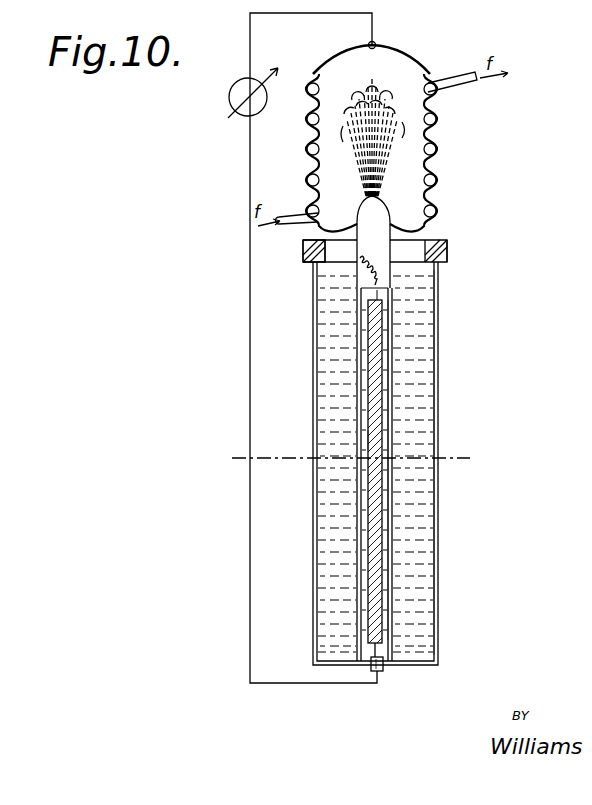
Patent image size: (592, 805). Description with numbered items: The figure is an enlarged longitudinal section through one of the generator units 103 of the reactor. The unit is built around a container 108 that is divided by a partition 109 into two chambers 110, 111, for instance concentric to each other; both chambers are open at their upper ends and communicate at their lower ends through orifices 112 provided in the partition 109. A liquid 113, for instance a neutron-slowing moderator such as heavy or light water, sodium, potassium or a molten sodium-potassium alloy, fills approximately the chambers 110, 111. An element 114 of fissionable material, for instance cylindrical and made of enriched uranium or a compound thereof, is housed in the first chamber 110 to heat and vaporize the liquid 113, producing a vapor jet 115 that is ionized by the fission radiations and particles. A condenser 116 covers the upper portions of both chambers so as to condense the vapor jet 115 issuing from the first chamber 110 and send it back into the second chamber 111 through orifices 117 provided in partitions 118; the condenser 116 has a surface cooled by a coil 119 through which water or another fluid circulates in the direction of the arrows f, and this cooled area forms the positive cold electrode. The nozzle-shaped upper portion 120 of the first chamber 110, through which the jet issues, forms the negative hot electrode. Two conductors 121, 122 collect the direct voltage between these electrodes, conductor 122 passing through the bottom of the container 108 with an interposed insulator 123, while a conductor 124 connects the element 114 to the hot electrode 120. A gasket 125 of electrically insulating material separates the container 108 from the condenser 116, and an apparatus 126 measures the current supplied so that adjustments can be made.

The generator unit 103 is at (446, 296).
The container 108 is at (436, 390).
The partition 109 is at (393, 343).
The first chamber 110 is at (386, 548).
The second chamber 111 is at (412, 494).
The orifices 112 is at (397, 612).
The liquid 113 is at (392, 292).
The element of fissionable material 114 is at (375, 440).
The vapor jet 115 is at (385, 164).
The condenser 116 is at (429, 67).
The orifices 117 is at (420, 240).
The partitions 118 is at (388, 222).
The coil 119 is at (436, 119).
The upper portion of first chamber 120 is at (362, 210).
The conductor 121 is at (374, 25).
The conductor 122 is at (309, 683).
The insulator 123 is at (384, 669).
The conductor 124 is at (358, 268).
The gasket 125 is at (304, 252).
The current measuring apparatus 126 is at (229, 92).